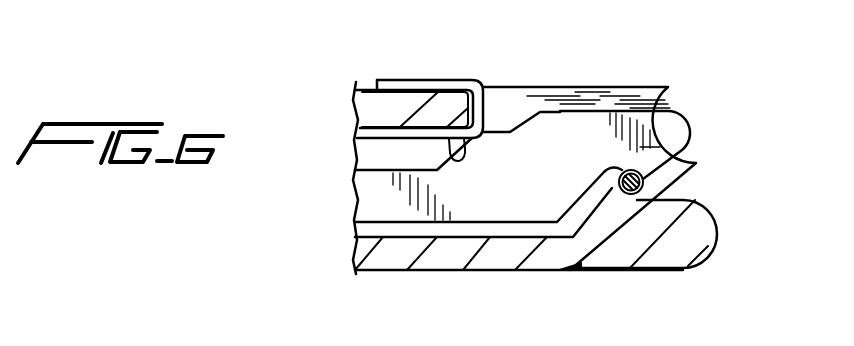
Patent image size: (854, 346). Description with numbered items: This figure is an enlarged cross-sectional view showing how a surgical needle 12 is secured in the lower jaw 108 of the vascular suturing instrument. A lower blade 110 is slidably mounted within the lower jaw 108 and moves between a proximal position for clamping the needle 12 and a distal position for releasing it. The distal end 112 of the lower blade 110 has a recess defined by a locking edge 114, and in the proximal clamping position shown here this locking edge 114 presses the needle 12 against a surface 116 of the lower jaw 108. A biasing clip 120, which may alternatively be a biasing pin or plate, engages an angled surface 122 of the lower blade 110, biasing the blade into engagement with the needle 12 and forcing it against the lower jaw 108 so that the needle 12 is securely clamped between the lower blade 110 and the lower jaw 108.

The surgical needle 12 is at (632, 205).
The lower jaw 108 is at (682, 100).
The lower blade 110 is at (575, 137).
The distal end 112 is at (685, 122).
The locking edge 114 is at (650, 170).
The surface 116 is at (618, 204).
The biasing clip 120 is at (477, 81).
The angled surface 122 is at (452, 150).